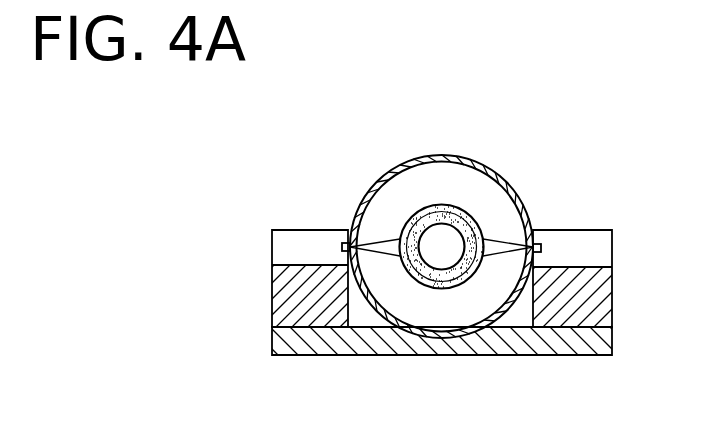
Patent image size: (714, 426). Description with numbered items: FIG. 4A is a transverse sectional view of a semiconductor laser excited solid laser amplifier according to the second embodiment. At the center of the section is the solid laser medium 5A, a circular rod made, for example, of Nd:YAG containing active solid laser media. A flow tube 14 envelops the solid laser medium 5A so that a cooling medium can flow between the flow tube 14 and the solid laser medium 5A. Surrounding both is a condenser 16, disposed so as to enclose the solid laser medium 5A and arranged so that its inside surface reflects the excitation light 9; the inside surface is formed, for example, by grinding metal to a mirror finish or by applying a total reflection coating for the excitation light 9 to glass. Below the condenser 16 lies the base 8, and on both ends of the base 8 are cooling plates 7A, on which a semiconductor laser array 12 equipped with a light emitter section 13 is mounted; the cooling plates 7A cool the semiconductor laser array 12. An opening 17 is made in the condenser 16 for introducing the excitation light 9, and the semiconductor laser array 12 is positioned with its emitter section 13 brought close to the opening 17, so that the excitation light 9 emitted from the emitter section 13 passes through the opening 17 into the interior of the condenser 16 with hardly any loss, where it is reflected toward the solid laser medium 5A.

The solid laser medium 5A is at (441, 245).
The cooling plate 7A is at (292, 300).
The base 8 is at (448, 352).
The excitation light 9 is at (392, 240).
The semiconductor laser array 12 is at (308, 243).
The light emitter section 13 is at (346, 243).
The flow tube 14 is at (470, 207).
The condenser 16 is at (530, 192).
The opening 17 is at (538, 243).